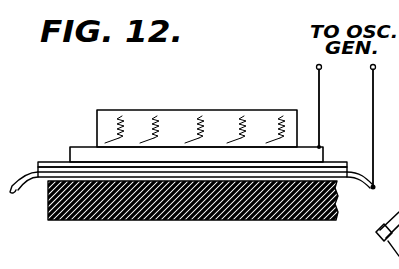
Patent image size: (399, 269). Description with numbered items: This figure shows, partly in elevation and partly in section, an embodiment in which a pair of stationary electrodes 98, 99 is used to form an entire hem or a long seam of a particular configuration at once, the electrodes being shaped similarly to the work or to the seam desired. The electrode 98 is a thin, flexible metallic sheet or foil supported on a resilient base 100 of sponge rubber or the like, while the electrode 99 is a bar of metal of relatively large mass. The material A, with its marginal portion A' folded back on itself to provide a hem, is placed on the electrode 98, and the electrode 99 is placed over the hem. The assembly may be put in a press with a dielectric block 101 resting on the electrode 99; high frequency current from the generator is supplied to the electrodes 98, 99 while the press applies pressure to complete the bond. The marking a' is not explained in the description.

The electrode 98 is at (22, 190).
The electrode 99 is at (70, 149).
The resilient base 100 is at (157, 220).
The dielectric block 101 is at (168, 113).
The material A is at (192, 132).
The marginal portion A' is at (207, 160).
The terminal a' (adjacent figure) a' is at (377, 240).